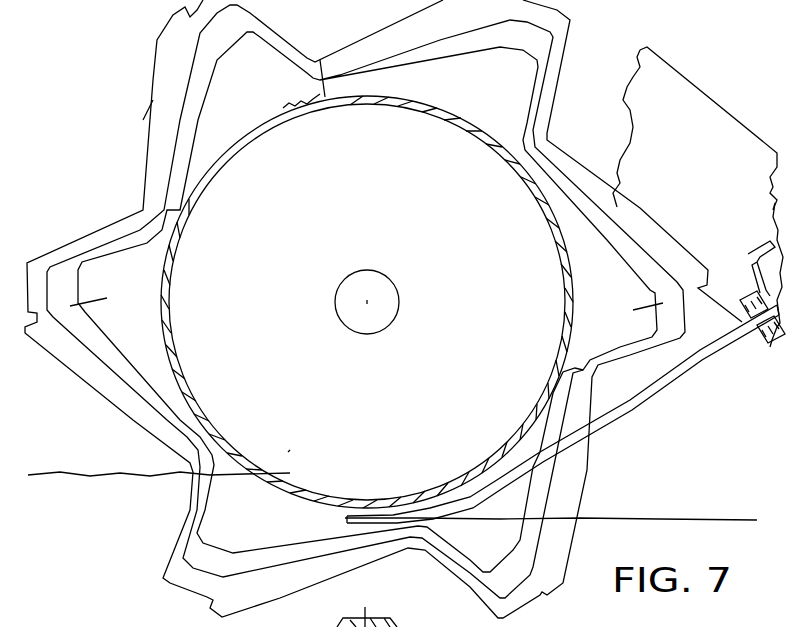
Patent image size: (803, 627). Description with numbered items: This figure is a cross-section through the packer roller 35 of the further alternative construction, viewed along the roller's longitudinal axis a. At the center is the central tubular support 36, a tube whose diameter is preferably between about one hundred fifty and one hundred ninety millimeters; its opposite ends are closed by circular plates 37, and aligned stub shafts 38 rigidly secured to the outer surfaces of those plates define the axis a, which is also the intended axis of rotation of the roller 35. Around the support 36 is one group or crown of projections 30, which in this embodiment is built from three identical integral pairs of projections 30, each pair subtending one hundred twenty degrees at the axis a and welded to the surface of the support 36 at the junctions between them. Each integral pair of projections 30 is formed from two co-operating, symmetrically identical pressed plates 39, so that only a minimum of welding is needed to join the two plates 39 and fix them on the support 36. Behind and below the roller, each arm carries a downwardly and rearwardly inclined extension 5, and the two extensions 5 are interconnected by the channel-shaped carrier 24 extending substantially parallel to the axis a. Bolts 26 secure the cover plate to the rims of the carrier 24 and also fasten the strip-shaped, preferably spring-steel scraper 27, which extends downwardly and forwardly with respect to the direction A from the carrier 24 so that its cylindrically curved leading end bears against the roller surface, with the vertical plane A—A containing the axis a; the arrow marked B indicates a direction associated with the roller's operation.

The extension 5 is at (683, 77).
The carrier 24 is at (768, 241).
The bolts 26 is at (773, 347).
The scraper 27 is at (650, 393).
The projections 30 is at (70, 245).
The packer roller 35 is at (140, 118).
The central tubular support 36 is at (460, 132).
The circular plates 37 is at (288, 452).
The stub shafts 38 is at (353, 318).
The pressed plates 39 is at (648, 312).
The axis a is at (367, 300).
The direction A is at (369, 613).
The direction B is at (42, 187).